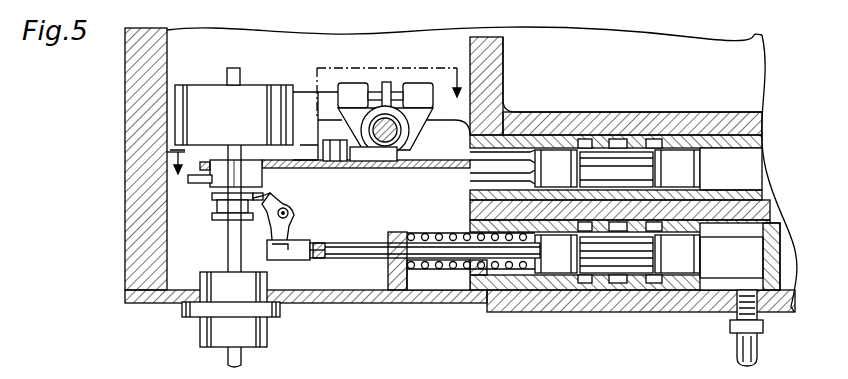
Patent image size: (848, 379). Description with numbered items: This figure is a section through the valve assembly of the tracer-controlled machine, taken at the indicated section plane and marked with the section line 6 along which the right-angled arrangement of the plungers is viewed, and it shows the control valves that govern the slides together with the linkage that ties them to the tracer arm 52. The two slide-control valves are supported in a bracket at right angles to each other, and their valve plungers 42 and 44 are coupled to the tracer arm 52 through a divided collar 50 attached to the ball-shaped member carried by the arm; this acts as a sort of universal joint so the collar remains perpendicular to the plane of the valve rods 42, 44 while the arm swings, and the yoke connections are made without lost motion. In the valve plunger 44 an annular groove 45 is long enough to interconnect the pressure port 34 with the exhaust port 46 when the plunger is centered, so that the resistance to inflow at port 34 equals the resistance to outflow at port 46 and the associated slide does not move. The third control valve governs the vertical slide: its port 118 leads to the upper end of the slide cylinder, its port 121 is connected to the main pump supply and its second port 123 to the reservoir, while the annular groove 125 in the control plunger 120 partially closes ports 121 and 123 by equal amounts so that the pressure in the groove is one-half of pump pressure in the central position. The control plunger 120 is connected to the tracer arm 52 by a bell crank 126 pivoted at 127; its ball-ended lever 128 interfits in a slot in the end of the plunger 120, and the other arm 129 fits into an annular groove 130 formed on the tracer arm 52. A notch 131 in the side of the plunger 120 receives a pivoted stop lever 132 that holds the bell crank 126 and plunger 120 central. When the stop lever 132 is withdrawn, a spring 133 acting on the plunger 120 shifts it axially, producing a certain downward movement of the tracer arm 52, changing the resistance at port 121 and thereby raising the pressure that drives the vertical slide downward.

The section line 6- 6 is at (180, 186).
The pressure port 34 is at (660, 133).
The valve plunger 42 is at (210, 192).
The valve plunger 44 is at (430, 168).
The annular groove 45 is at (627, 163).
The exhaust port 46 is at (584, 139).
The divided collar 50 is at (214, 198).
The tracer arm 52 is at (228, 240).
The port 118 is at (614, 283).
The control plunger 120 is at (375, 258).
The port 121 is at (580, 283).
The second port 123 is at (657, 283).
The annular groove 125 is at (637, 258).
The bell crank 126 is at (290, 212).
The pivot 127 is at (293, 223).
The ball-ended lever 128 is at (281, 252).
The other arm 129 is at (262, 204).
The annular groove 130 is at (214, 209).
The notch 131 is at (328, 243).
The pivoted stop lever 132 is at (320, 258).
The spring 133 is at (446, 220).